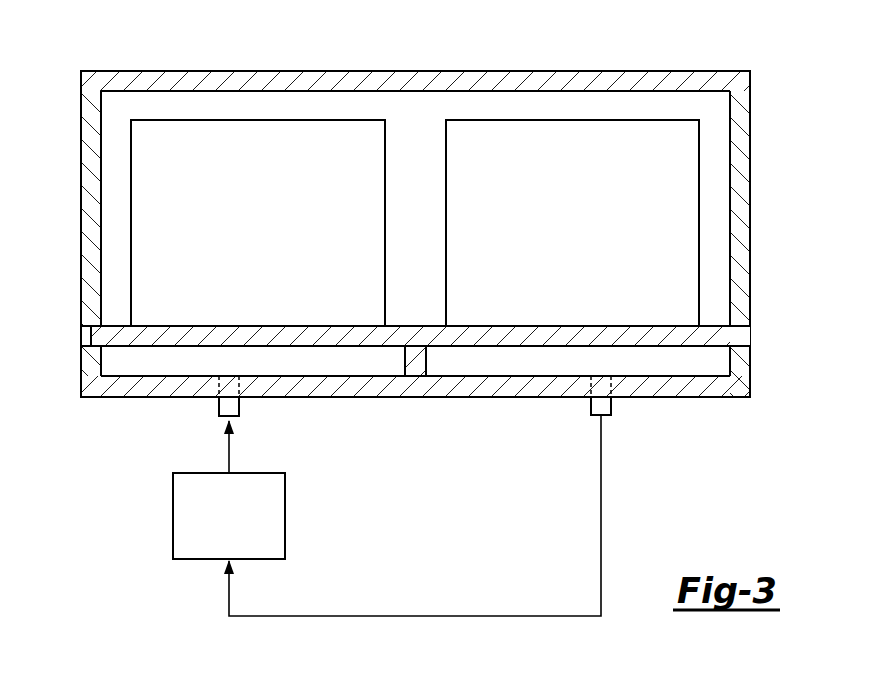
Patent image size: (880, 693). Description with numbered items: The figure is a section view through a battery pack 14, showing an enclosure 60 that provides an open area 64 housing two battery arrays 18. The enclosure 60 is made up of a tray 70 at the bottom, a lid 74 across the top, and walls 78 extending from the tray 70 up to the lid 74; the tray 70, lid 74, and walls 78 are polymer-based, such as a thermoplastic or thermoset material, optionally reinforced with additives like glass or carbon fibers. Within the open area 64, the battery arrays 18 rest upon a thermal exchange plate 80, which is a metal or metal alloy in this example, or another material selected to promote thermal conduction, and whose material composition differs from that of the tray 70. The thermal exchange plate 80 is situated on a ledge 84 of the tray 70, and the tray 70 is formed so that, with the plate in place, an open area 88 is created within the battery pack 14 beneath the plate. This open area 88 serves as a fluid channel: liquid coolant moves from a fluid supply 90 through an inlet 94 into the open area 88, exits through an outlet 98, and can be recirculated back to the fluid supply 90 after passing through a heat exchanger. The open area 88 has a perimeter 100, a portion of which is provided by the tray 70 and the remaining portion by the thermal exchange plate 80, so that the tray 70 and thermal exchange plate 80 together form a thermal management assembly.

The battery pack 14 is at (428, 238).
The battery arrays 18 is at (525, 120).
The enclosure 60 is at (428, 242).
The open area 64 is at (414, 122).
The tray 70 is at (705, 398).
The lid 74 is at (637, 70).
The walls 78 is at (750, 167).
The thermal exchange plate 80 is at (710, 326).
The ledge 84 is at (735, 345).
The open area 88 is at (453, 358).
The fluid supply 90 is at (173, 515).
The inlet 94 is at (219, 406).
The outlet 98 is at (591, 405).
The perimeter 100 is at (127, 374).